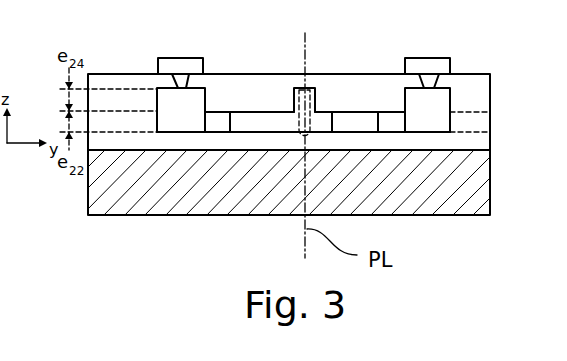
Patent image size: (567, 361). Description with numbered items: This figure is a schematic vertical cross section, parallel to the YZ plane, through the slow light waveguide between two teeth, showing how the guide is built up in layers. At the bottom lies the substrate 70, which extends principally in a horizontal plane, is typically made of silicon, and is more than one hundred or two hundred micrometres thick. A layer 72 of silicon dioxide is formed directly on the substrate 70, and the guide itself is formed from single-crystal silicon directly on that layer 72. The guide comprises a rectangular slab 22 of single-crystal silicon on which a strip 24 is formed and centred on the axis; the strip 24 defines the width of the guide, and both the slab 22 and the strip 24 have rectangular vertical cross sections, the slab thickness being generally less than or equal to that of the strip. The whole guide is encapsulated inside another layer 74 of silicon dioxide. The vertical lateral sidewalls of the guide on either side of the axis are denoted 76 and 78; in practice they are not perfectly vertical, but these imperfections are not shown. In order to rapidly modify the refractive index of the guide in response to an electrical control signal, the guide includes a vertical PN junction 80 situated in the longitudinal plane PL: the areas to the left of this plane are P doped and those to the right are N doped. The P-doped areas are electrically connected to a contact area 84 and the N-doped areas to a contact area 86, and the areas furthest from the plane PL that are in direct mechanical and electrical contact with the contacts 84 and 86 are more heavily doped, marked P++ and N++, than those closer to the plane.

The substrate 70 is at (477, 183).
The layer of silicon dioxide 72 is at (491, 133).
The slab 22 is at (491, 112).
The layer of silicon dioxide 74 is at (491, 75).
The contact area 86 is at (166, 66).
The contact area 84 is at (427, 68).
The vertical lateral sidewall 78 is at (294, 98).
The vertical lateral sidewall 76 is at (316, 102).
The strip 24 is at (310, 90).
The vertical PN junction 80 is at (296, 115).